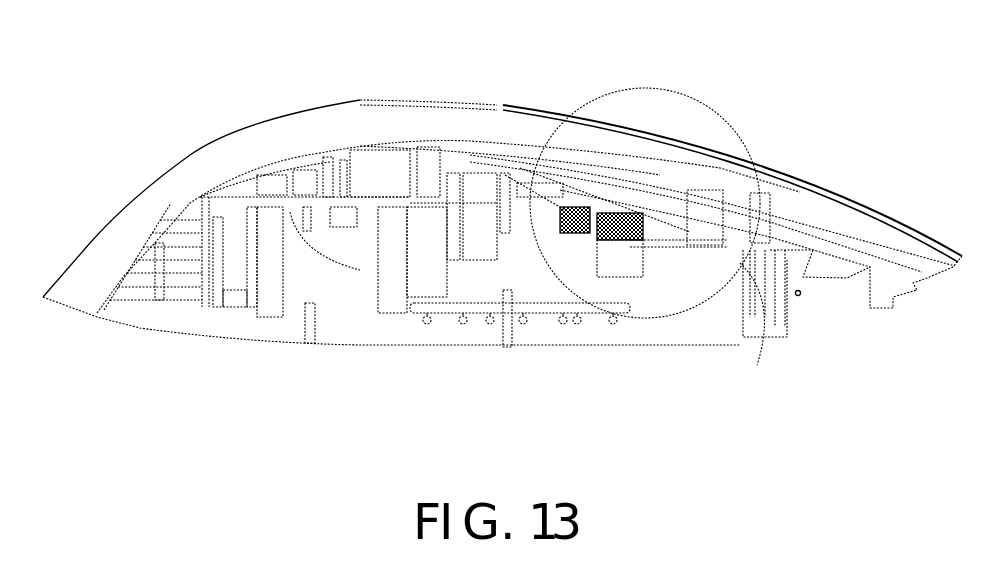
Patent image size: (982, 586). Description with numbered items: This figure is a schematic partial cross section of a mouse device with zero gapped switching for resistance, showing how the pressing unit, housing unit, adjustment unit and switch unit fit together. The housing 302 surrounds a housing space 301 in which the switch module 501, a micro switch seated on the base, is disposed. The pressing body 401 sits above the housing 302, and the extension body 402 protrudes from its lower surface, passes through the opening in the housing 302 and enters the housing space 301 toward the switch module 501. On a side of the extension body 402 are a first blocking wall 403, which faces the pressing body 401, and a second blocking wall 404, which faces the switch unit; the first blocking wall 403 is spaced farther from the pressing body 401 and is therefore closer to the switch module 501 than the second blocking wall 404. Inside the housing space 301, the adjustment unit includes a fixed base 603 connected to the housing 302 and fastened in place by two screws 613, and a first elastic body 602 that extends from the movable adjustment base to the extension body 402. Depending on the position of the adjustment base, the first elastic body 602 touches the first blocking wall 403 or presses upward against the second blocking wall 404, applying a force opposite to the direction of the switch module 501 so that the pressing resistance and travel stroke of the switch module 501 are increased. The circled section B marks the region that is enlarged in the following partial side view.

The housing space 301 is at (357, 322).
The housing 302 is at (500, 173).
The pressing body 401 is at (697, 183).
The extension body 402 is at (710, 217).
The first blocking wall 403 is at (723, 227).
The second blocking wall 404 is at (720, 233).
The switch module 501 is at (710, 300).
The first elastic body 602 is at (690, 225).
The fixed base 603 is at (590, 213).
The screws 613 is at (570, 213).
The section B is at (570, 105).